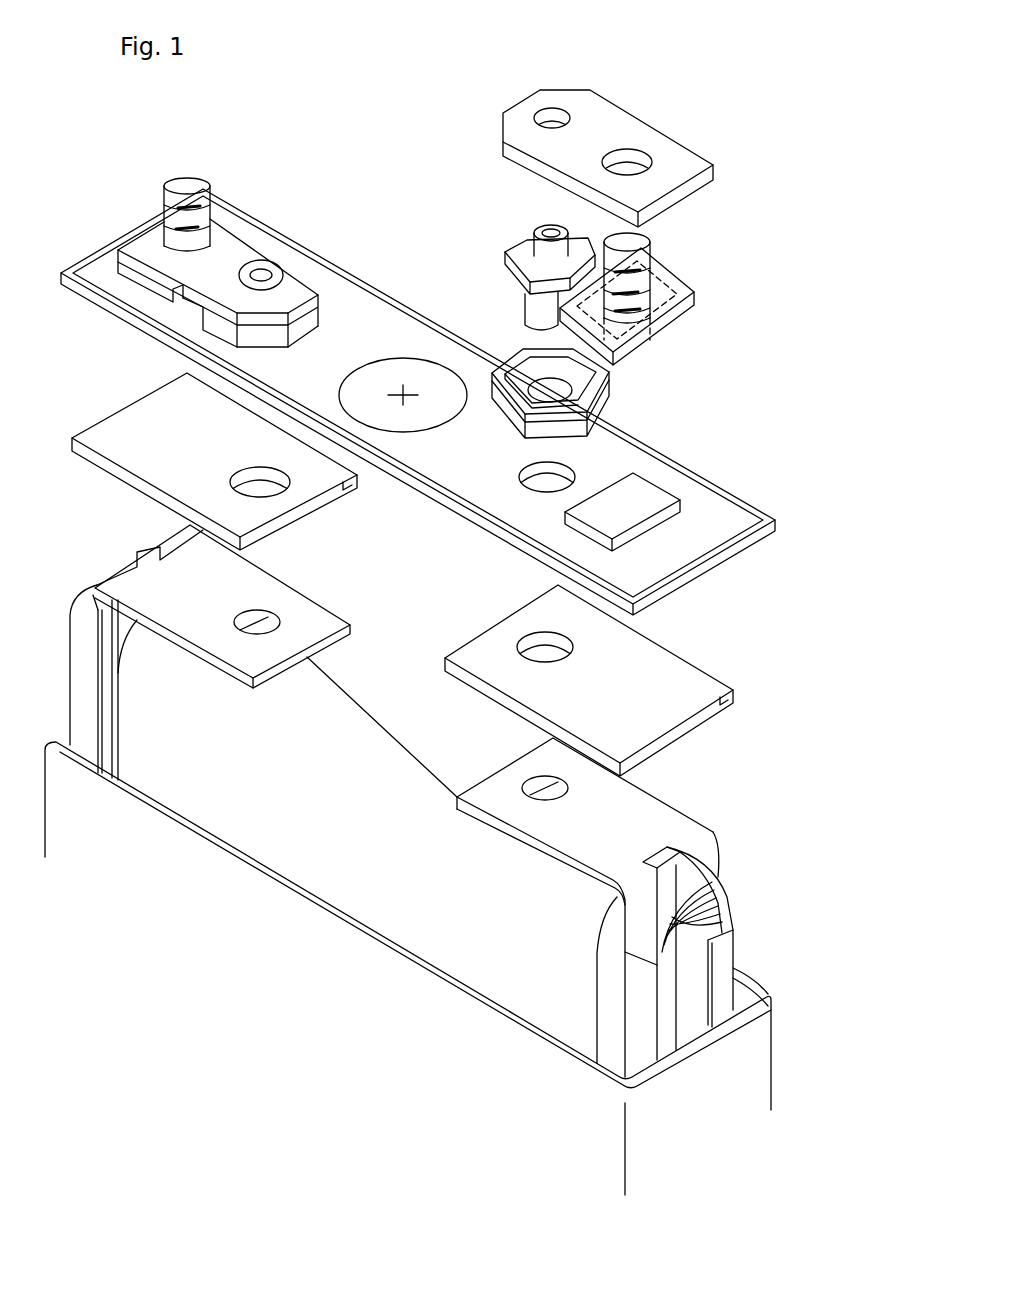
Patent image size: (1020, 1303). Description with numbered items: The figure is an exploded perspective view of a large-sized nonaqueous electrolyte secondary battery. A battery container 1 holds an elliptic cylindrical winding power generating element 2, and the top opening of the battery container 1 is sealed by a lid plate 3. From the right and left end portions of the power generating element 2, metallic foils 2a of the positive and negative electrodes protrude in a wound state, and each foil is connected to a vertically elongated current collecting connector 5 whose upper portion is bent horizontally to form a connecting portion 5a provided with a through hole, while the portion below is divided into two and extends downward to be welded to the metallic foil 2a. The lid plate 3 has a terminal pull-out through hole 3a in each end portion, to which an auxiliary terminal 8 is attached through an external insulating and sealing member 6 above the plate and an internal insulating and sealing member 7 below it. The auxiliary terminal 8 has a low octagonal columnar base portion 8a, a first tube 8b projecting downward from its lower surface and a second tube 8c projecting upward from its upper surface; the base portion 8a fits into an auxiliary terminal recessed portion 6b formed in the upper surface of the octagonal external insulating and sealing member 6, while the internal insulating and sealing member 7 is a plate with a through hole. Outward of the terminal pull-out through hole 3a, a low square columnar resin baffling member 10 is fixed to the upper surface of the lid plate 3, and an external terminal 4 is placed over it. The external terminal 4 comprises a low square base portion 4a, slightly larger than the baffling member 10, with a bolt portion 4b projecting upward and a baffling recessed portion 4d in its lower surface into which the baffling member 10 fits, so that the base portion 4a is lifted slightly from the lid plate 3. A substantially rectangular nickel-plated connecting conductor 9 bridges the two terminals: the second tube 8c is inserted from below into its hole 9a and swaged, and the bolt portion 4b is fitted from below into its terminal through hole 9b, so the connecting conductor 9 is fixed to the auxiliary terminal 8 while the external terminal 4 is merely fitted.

The battery container 1 is at (277, 913).
The power generating element 2 is at (355, 715).
The metallic foil 2a is at (120, 633).
The lid plate 3 is at (365, 330).
The terminal pull-out through hole 3a is at (563, 472).
The external terminal 4 is at (165, 180).
The base portion 4a is at (140, 277).
The bolt portion 4b is at (193, 181).
The baffling recessed portion 4d is at (653, 340).
The current collecting connector 5 is at (82, 565).
The connecting portion 5a is at (290, 600).
The external insulating and sealing member 6 is at (508, 417).
The auxiliary terminal recessed portion 6b is at (525, 360).
The internal insulating and sealing member 7 is at (130, 425).
The auxiliary terminal 8 is at (270, 265).
The base portion 8a is at (520, 263).
The first tube 8b is at (535, 307).
The second tube 8c is at (250, 275).
The connecting conductor 9 is at (240, 240).
The hole 9a is at (548, 116).
The terminal through hole 9b is at (645, 160).
The baffling member 10 is at (640, 493).